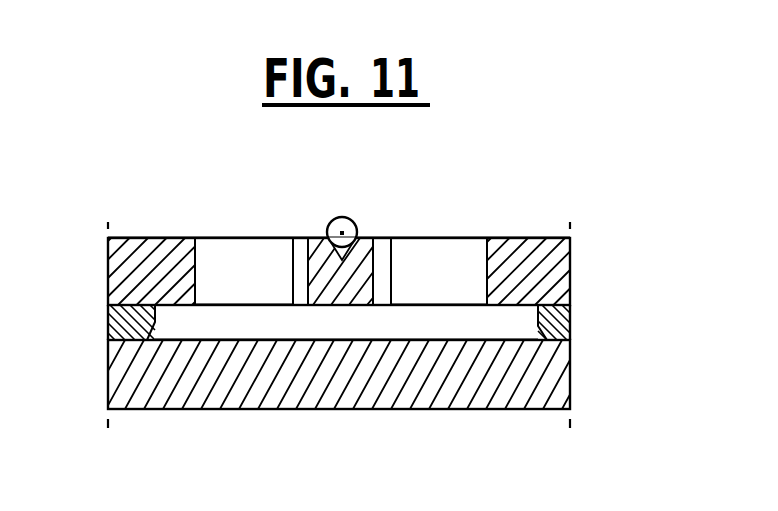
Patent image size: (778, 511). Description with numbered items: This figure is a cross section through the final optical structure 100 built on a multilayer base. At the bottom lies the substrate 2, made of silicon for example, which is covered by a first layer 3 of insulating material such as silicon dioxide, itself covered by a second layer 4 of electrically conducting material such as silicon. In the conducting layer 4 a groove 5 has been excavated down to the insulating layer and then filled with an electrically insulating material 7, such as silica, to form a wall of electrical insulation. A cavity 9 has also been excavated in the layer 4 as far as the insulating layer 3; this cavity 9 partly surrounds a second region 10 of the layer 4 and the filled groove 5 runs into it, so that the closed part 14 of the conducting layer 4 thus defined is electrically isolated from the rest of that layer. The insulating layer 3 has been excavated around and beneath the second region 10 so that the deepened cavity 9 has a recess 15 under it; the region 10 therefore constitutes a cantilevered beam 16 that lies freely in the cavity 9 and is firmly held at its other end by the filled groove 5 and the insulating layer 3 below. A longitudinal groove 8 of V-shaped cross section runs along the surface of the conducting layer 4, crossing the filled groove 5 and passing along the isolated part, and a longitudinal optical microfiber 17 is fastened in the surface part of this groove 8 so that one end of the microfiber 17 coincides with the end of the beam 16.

The optical structure 100 is at (549, 221).
The substrate 2 is at (533, 382).
The first layer 3 is at (562, 324).
The second layer 4 is at (535, 272).
The groove 5 is at (293, 268).
The electrically insulating material 7 is at (392, 264).
The longitudinal groove 8 is at (342, 259).
The cavity 9 is at (433, 281).
The second region 10 is at (302, 238).
The closed part 14 is at (364, 236).
The recess 15 is at (242, 322).
The cantilevered beam 16 is at (338, 276).
The optical microfiber 17 is at (340, 217).